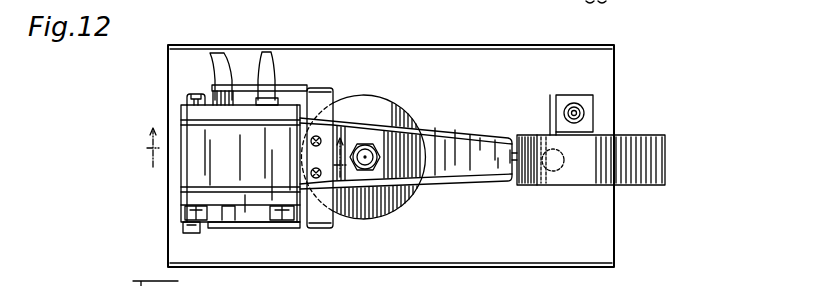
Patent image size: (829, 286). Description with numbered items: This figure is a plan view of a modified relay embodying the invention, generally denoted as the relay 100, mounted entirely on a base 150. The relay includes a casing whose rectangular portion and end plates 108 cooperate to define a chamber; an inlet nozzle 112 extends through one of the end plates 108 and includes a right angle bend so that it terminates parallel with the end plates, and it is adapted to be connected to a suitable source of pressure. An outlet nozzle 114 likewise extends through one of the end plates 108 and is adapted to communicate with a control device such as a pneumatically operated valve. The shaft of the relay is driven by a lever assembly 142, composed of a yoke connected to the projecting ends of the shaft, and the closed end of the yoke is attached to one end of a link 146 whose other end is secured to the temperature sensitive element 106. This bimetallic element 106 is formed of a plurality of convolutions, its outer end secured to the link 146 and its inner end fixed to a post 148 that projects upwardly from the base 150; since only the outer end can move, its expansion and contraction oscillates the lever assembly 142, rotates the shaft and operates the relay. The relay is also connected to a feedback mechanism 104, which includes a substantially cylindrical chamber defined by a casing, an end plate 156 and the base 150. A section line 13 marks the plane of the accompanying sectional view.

The section line 13 is at (238, 158).
The relay 100 is at (166, 117).
The feedback mechanism 104 is at (262, 156).
The temperature sensitive element 106 is at (190, 168).
The end plates 108 is at (182, 104).
The inlet nozzle 112 is at (270, 55).
The outlet nozzle 114 is at (228, 55).
The lever assembly 142 is at (465, 112).
The link 146 is at (484, 168).
The post 148 is at (549, 120).
The base 150 is at (603, 83).
The end plate 156 is at (398, 203).